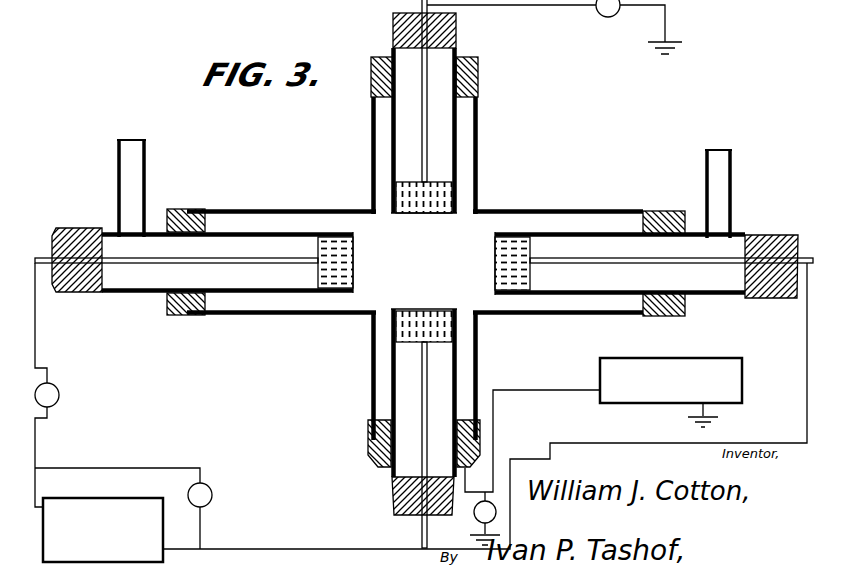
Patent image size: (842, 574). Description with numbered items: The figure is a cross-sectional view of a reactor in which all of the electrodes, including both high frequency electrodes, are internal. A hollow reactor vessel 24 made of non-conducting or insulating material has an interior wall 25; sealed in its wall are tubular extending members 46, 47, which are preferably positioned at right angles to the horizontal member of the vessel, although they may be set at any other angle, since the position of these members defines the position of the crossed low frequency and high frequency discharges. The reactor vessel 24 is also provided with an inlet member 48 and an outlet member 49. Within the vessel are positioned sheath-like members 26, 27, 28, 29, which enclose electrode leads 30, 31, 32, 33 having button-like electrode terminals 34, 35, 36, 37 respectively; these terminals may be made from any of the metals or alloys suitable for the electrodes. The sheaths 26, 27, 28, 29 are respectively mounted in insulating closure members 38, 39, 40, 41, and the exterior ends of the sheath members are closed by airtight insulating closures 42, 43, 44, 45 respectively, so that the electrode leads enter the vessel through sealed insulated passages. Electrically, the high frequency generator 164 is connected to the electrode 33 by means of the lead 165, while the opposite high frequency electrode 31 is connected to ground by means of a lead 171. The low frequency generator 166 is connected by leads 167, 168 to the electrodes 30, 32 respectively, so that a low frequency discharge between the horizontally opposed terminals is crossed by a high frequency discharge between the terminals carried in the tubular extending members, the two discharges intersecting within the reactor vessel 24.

The hollow reactor vessel 24 is at (241, 211).
The interior wall 25 is at (338, 210).
The sheath-like member 26 is at (250, 292).
The sheath-like member 27 is at (455, 124).
The sheath-like member 28 is at (585, 234).
The sheath-like member 29 is at (392, 373).
The electrode lead 30 is at (150, 263).
The electrode lead 31 is at (427, 148).
The electrode lead 32 is at (623, 265).
The electrode lead 33 is at (425, 390).
The button-like electrode terminal 34 is at (340, 256).
The button-like electrode terminal 35 is at (428, 214).
The button-like electrode terminal 36 is at (496, 258).
The button-like electrode terminal 37 is at (428, 316).
The insulating closure member 38 is at (177, 310).
The insulating closure member 39 is at (474, 64).
The insulating closure member 40 is at (670, 212).
The insulating closure member 41 is at (475, 463).
The airtight insulating closure 42 is at (58, 228).
The airtight insulating closure 43 is at (393, 27).
The airtight insulating closure 44 is at (783, 235).
The airtight insulating closure 45 is at (392, 505).
The tubular extending member 46 is at (375, 135).
The tubular extending member 47 is at (372, 408).
The inlet member 48 is at (147, 172).
The outlet member 49 is at (738, 175).
The high frequency generator 164 is at (698, 357).
The lead 165 is at (556, 390).
The low frequency generator 166 is at (96, 498).
The lead 167 is at (38, 347).
The lead 168 is at (295, 549).
The lead 171 is at (551, 5).